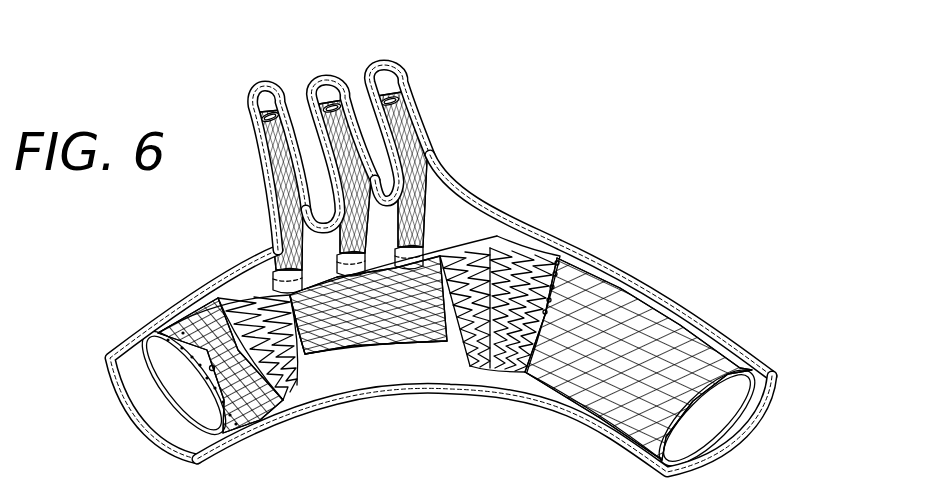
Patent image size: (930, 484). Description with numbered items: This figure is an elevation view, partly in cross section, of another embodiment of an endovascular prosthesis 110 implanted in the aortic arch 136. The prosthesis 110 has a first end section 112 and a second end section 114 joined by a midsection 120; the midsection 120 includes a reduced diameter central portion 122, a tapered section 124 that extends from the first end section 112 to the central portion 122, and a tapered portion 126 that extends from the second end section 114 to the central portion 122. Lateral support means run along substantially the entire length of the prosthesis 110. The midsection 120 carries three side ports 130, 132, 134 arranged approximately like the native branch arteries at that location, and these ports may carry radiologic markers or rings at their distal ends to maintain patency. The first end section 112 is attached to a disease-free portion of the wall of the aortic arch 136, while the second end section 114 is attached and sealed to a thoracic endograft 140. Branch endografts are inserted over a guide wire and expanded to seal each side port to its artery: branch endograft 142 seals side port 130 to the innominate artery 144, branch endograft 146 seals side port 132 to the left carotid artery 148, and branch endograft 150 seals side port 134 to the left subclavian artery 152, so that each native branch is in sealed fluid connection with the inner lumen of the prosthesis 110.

The endovascular prosthesis 110 is at (530, 228).
The first end section 112 is at (152, 322).
The second end section 114 is at (550, 261).
The midsection 120 is at (402, 348).
The central portion of the midsection 122 is at (328, 344).
The tapered section 124 is at (287, 397).
The tapered portion 126 is at (467, 346).
The side port 130 is at (280, 292).
The side port 132 is at (282, 245).
The side port 134 is at (399, 236).
The aortic arch 136 is at (110, 357).
The thoracic endograft 140 is at (747, 363).
The branch endograft 142 is at (267, 157).
The innominate artery 144 is at (258, 85).
The branch endograft 146 is at (345, 156).
The left carotid artery 148 is at (322, 76).
The branch endograft 150 is at (386, 104).
The left subclavian artery 152 is at (385, 62).